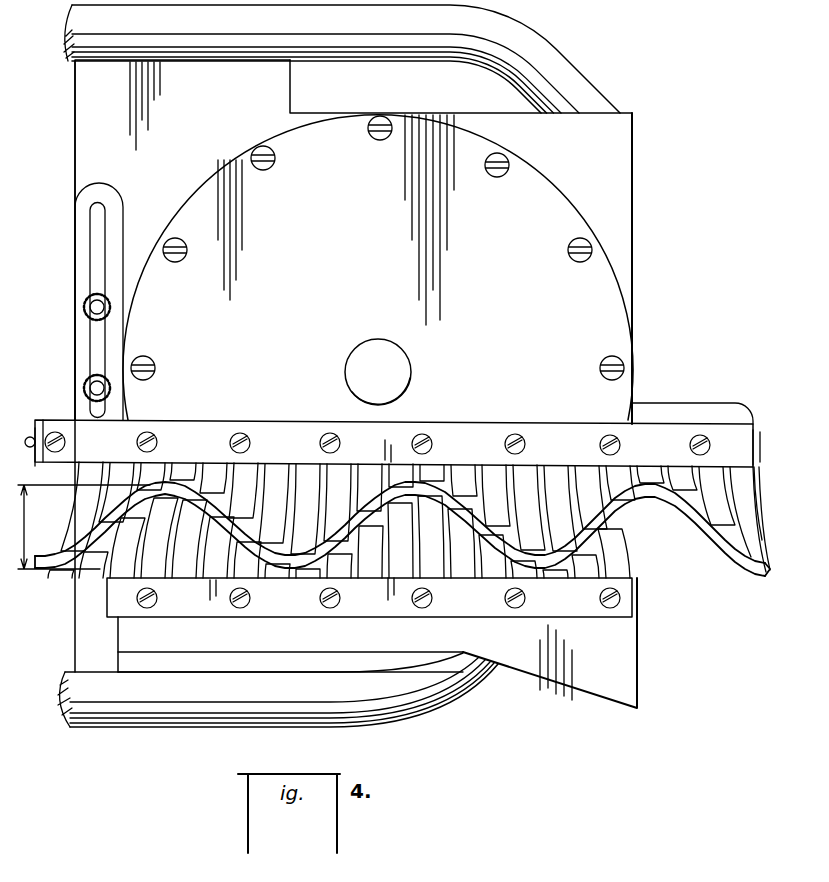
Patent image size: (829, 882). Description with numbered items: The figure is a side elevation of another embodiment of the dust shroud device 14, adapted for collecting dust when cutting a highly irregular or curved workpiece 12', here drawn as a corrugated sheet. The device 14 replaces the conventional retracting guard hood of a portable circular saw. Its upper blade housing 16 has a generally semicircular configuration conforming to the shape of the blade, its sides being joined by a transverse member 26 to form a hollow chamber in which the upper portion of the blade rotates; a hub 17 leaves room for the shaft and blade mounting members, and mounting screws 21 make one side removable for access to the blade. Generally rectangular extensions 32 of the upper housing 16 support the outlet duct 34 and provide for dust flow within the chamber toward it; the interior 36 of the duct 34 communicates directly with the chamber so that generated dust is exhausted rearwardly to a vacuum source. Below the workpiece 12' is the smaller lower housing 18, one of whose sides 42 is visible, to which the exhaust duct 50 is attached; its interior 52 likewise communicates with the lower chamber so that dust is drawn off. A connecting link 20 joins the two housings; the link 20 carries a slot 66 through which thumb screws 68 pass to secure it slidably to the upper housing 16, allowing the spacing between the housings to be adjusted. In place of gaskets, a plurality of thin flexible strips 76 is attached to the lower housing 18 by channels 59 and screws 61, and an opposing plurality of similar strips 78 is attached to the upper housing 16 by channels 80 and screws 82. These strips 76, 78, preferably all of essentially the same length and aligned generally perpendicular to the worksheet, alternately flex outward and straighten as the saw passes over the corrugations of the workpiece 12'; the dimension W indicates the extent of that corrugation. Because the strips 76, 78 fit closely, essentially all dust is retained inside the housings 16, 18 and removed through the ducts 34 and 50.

The dust shroud device 14 is at (669, 184).
The upper blade housing 16 is at (232, 111).
The hub 17 is at (383, 350).
The lower housing 18 is at (637, 670).
The connecting link 20 is at (85, 223).
The mounting screws 21 is at (500, 165).
The transverse member 26 is at (392, 113).
The rectangular extensions 32 is at (614, 163).
The outlet duct 34 is at (542, 48).
The interior of duct 36 is at (68, 36).
The side 42 is at (416, 648).
The exhaust duct 50 is at (420, 712).
The interior of exhaust duct 52 is at (60, 700).
The channels 59 is at (637, 612).
The screws 61 is at (328, 610).
The slot 66 is at (95, 258).
The thumb screws 68 is at (84, 312).
The thin flexible strips 76 is at (436, 559).
The flexible strips 78 is at (288, 503).
The channels 80 is at (676, 455).
The screw 82 is at (328, 438).
The irregular or curved workpiece 12' is at (407, 549).
The width W is at (81, 527).